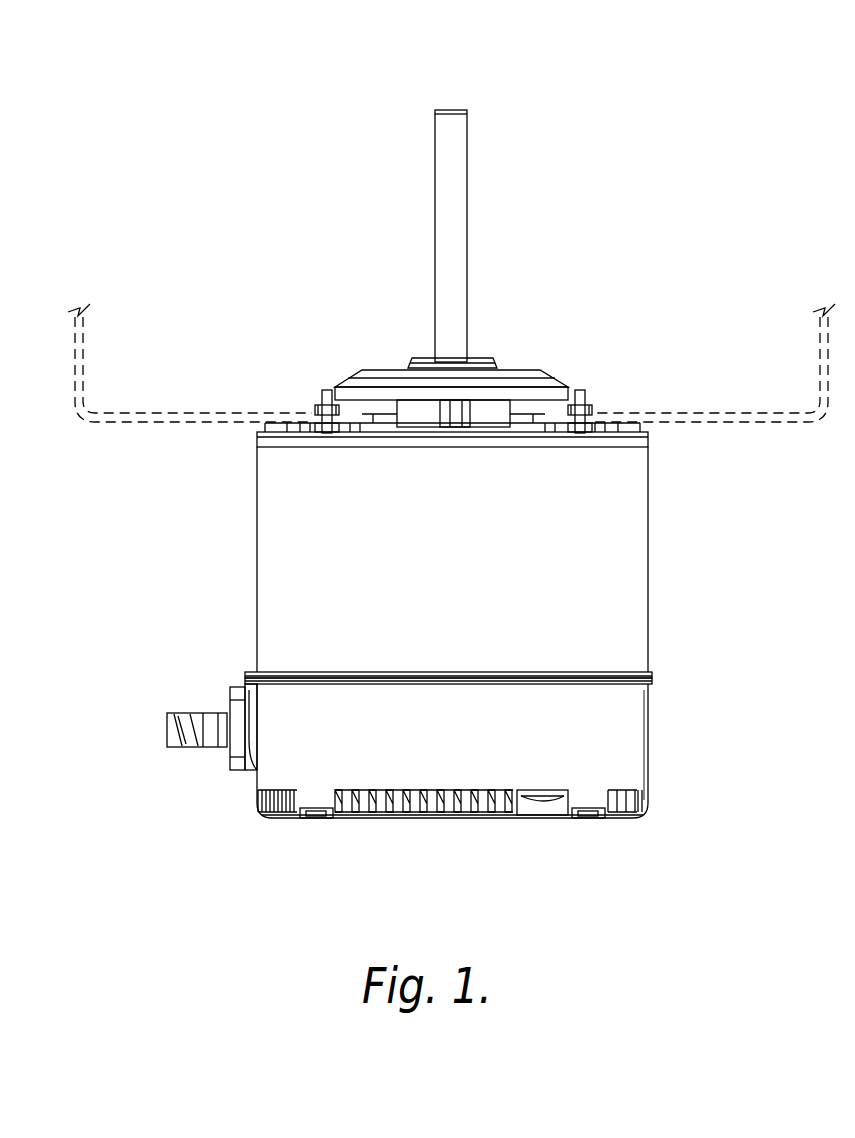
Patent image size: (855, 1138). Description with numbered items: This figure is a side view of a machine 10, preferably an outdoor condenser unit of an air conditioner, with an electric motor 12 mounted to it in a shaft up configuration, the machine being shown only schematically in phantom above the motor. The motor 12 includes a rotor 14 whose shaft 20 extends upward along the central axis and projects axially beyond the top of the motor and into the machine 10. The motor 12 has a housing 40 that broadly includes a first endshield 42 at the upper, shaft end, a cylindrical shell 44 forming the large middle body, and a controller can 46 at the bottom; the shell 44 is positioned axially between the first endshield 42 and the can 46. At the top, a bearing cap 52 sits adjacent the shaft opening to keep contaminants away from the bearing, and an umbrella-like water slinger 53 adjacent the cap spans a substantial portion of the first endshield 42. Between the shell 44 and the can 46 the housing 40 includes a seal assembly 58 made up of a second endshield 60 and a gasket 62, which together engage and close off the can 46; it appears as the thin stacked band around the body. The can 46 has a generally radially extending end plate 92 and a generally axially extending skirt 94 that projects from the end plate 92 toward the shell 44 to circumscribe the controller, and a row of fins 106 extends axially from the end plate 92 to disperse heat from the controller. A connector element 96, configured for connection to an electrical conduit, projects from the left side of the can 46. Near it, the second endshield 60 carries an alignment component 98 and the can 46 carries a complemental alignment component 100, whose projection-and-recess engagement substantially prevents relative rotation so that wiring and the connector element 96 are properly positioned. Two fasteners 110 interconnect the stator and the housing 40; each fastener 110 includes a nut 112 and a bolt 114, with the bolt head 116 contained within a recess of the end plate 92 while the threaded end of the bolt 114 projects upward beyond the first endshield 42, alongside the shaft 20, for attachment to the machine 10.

The machine 10 is at (667, 83).
The electric motor 12 is at (636, 874).
The rotor 14 is at (479, 248).
The shaft 20 is at (457, 177).
The housing 40 is at (514, 548).
The first endshield 42 is at (643, 425).
The shell 44 is at (628, 527).
The controller can 46 is at (501, 801).
The bearing cap 52 is at (483, 408).
The water slinger 53 is at (515, 375).
The seal assembly 58 is at (521, 690).
The second endshield 60 is at (640, 673).
The gasket 62 is at (642, 690).
The end plate 92 is at (647, 797).
The skirt 94 is at (630, 772).
The connector element 96 is at (217, 742).
The alignment component 98 is at (244, 669).
The alignment component 100 is at (249, 771).
The fins 106 is at (412, 817).
The fastener 110 is at (312, 387).
The nut 112 is at (316, 410).
The bolt 114 is at (325, 397).
The head 116 is at (323, 820).